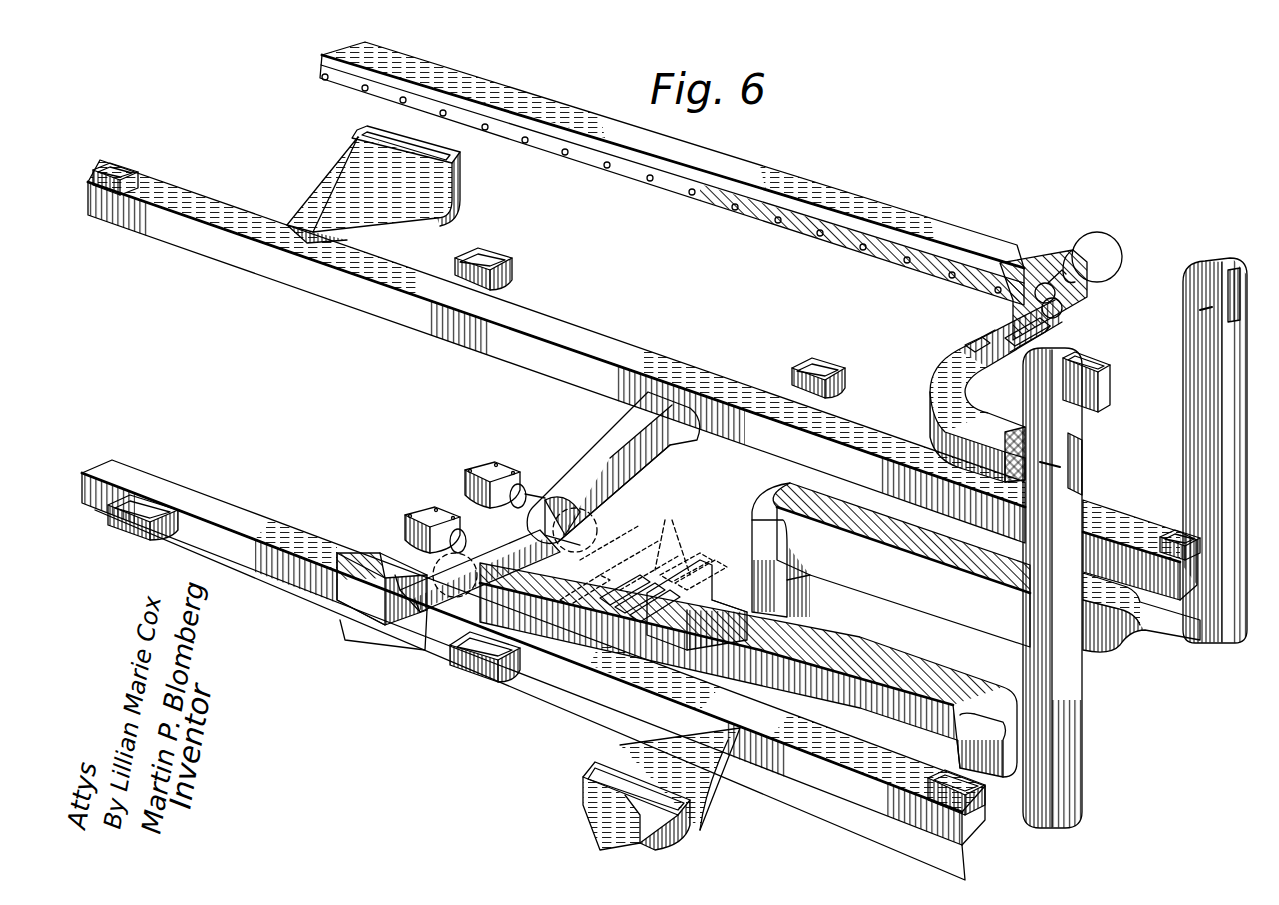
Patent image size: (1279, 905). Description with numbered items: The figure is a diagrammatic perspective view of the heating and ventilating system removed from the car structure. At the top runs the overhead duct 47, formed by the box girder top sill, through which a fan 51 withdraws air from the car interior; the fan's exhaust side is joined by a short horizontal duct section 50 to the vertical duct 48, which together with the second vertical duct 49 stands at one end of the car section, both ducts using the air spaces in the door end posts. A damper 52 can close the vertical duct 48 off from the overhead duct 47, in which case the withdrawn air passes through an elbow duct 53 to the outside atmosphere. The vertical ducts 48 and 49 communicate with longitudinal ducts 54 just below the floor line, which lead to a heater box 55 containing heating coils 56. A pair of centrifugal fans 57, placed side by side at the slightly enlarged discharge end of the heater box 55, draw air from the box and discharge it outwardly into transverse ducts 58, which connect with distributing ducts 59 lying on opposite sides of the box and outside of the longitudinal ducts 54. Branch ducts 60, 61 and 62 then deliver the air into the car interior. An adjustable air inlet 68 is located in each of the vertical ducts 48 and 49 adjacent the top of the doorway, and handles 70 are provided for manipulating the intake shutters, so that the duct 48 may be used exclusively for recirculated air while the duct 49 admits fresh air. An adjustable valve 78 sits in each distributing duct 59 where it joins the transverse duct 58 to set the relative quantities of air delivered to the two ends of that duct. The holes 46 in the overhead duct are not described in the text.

The holes 46 is at (692, 193).
The overhead duct 47 is at (752, 180).
The vertical duct 48 is at (1070, 508).
The vertical duct 49 is at (1205, 399).
The short horizontal duct section 50 is at (1045, 340).
The fan 51 is at (1045, 270).
The damper 52 is at (970, 343).
The elbow duct 53 is at (938, 400).
The longitudinal ducts 54 is at (755, 630).
The heater box 55 is at (680, 555).
The heating coils 56 is at (625, 547).
The centrifugal fans 57 is at (500, 510).
The transverse ducts 58 is at (640, 432).
The distributing ducts 59 is at (639, 520).
The branch ducts 60 is at (514, 272).
The branch ducts 61 is at (118, 170).
The branch ducts 62 is at (432, 205).
The air inlet 68 is at (1090, 457).
The handles 70 is at (1202, 318).
The adjustable valve 78 is at (390, 640).